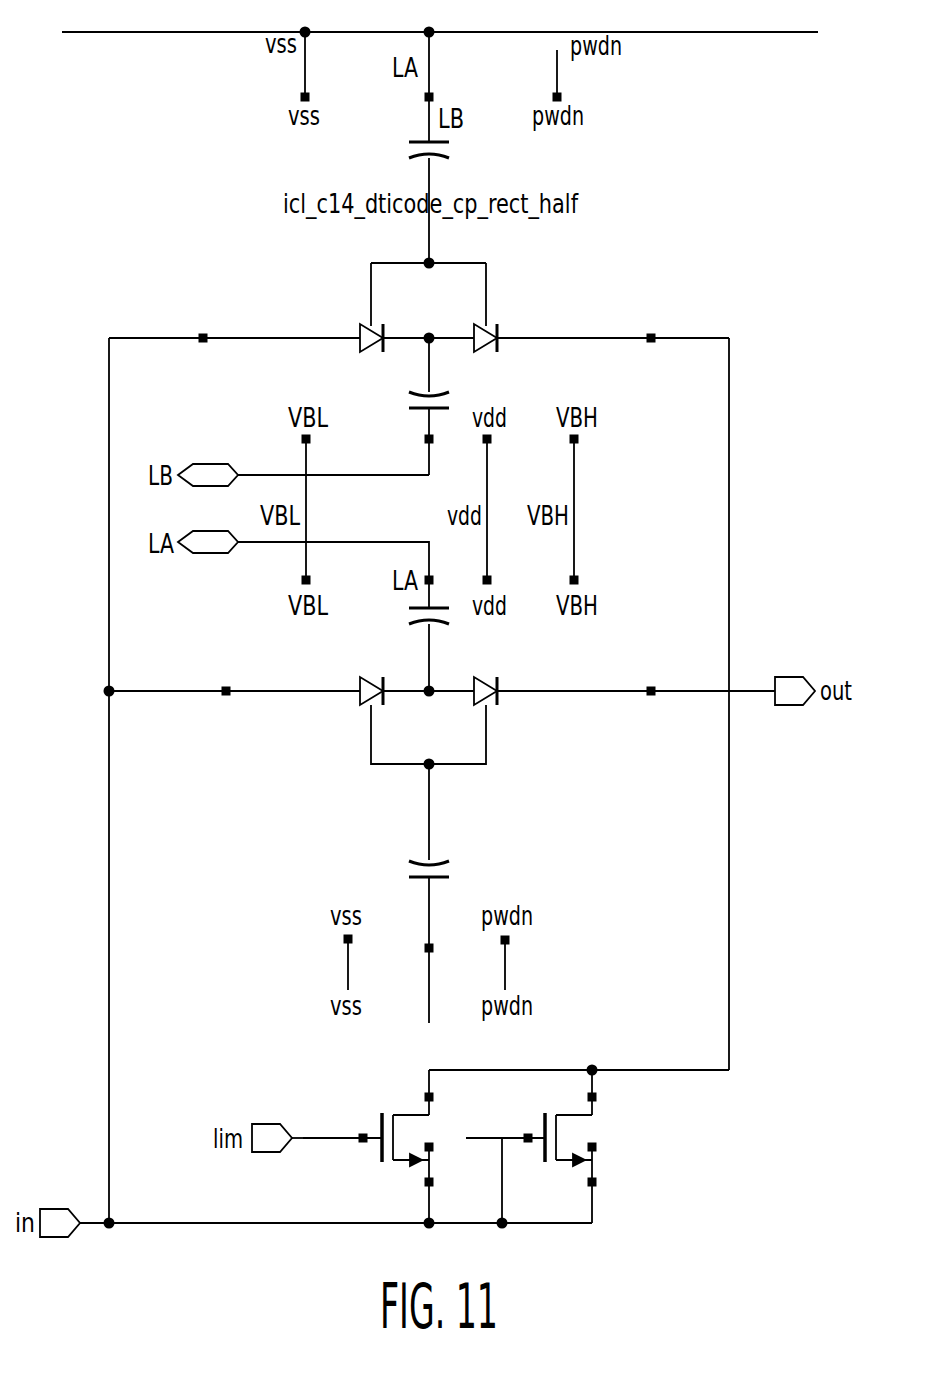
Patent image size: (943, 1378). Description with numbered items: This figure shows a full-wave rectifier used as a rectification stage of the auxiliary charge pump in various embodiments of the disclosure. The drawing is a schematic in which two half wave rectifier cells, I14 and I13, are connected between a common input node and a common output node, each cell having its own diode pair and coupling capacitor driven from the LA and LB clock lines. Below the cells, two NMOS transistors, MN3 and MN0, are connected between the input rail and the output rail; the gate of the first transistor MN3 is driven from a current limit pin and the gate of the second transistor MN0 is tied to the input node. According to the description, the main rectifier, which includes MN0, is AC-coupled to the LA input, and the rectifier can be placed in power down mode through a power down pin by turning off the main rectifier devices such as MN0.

The diode rectifier cell icl_c14_dticode_cp_rect_half (upper) I14 is at (419, 367).
The diode rectifier cell icl_c14_dticode_cp_rect_half (lower) I13 is at (442, 841).
The NMOS transistor MN3 (current limit) MN3 is at (395, 1146).
The main rectifier transistor MN0 is at (559, 1146).